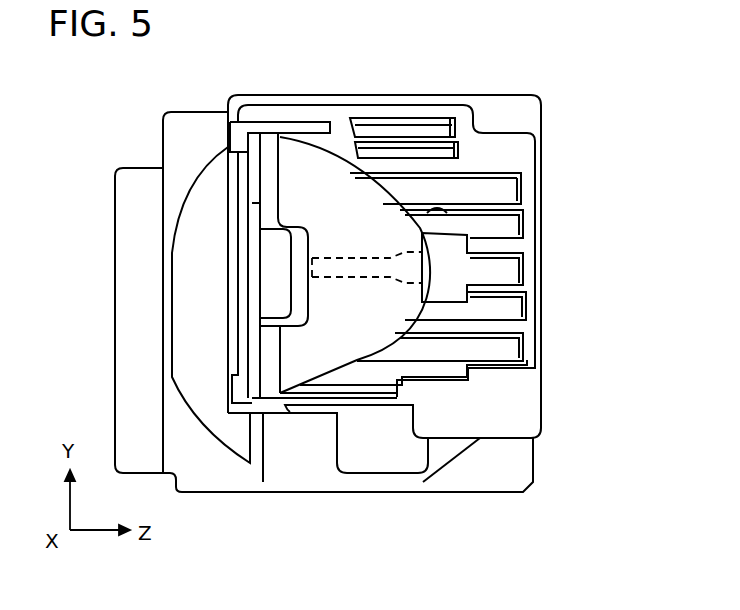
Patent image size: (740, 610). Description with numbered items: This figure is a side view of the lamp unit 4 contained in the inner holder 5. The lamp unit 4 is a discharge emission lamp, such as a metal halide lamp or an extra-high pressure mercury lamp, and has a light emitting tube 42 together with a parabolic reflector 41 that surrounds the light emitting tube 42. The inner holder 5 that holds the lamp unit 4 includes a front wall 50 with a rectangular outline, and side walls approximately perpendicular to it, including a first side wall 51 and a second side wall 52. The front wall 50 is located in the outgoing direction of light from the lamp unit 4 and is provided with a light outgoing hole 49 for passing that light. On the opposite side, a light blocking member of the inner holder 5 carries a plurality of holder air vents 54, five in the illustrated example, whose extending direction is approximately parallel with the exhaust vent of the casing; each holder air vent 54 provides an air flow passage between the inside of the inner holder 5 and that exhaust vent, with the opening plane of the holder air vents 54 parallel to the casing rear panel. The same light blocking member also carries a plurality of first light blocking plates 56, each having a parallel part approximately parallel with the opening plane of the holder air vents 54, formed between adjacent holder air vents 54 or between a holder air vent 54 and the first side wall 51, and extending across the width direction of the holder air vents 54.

The inner holder 5 is at (210, 99).
The lamp unit 4 is at (330, 113).
The second side wall 52 is at (317, 143).
The front wall 50 is at (236, 137).
The light outgoing hole 49 is at (243, 293).
The parabolic reflector 41 is at (315, 342).
The light emitting tube 42 is at (342, 262).
The first side wall 51 is at (263, 422).
The holder air vent 54 is at (430, 216).
The first light blocking plate 56 is at (522, 198).